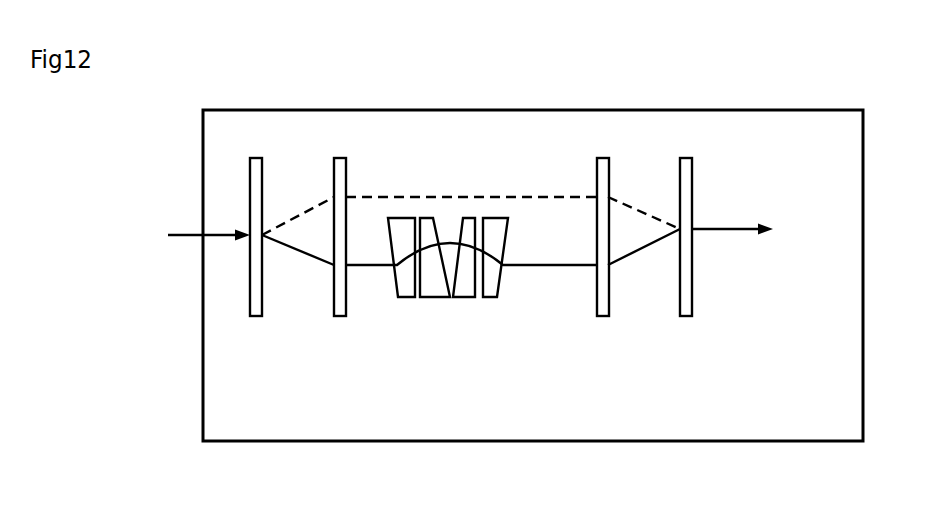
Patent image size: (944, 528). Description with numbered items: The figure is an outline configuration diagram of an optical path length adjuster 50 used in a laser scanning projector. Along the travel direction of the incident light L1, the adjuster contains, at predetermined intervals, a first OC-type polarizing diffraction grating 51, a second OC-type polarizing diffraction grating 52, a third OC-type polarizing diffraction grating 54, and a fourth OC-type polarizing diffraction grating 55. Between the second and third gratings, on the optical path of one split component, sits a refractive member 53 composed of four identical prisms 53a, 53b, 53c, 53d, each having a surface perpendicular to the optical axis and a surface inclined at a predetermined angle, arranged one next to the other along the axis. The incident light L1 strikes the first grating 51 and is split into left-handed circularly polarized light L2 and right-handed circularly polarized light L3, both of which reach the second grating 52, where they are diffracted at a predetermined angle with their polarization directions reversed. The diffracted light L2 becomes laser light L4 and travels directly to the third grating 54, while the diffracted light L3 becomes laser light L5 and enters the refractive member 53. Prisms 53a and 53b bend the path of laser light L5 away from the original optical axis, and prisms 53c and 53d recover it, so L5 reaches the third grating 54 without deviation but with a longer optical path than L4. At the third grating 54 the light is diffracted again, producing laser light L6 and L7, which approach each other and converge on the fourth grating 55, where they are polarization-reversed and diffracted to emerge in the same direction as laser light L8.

The optical path length adjuster 50 is at (577, 110).
The first OC-type polarizing diffraction grating 51 is at (253, 316).
The second OC-type polarizing diffraction grating 52 is at (338, 316).
The refractive member 53 is at (475, 328).
The prism 53a is at (405, 297).
The prism 53b is at (433, 297).
The prism 53c is at (468, 297).
The prism 53d is at (490, 297).
The third OC-type polarizing diffraction grating 54 is at (601, 316).
The fourth OC-type polarizing diffraction grating 55 is at (685, 316).
The incident light L1 is at (208, 221).
The left-handed circularly polarized light L2 is at (298, 209).
The right-handed circularly polarized light L3 is at (298, 247).
The laser light L4 is at (471, 183).
The laser light L5 is at (471, 249).
The laser light L6 is at (644, 205).
The laser light L7 is at (644, 254).
The laser light L8 is at (732, 216).